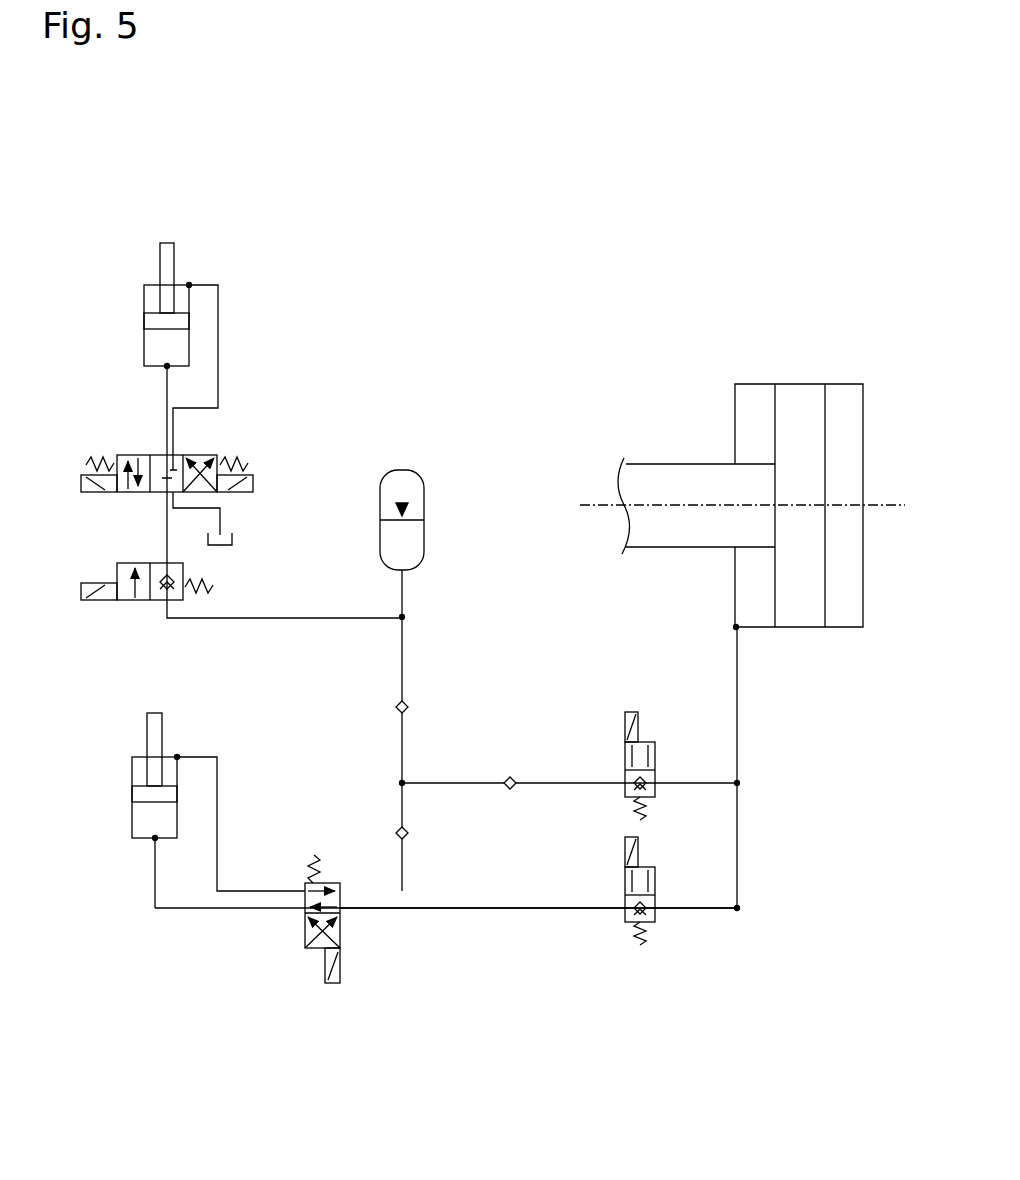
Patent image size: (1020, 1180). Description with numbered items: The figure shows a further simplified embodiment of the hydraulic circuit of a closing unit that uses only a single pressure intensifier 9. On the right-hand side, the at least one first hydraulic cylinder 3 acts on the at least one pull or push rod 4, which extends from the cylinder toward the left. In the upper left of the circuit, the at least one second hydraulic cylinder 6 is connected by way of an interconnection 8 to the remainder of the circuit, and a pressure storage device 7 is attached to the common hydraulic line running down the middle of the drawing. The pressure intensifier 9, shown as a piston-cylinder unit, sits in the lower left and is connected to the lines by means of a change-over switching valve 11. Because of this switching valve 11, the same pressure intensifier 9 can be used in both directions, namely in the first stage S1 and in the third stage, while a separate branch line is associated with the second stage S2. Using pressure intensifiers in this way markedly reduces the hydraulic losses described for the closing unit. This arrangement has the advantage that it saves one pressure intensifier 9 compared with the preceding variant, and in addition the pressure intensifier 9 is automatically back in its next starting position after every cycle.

The first hydraulic cylinder 3 is at (772, 356).
The pull or push rod 4 is at (692, 483).
The second hydraulic cylinder 6 is at (181, 220).
The pressure storage device 7 is at (406, 454).
The interconnection 8 is at (247, 424).
The pressure intensifier 9 is at (141, 855).
The switching valve 11 is at (352, 952).
The first stage S1 is at (498, 928).
The second stage S2 is at (534, 753).